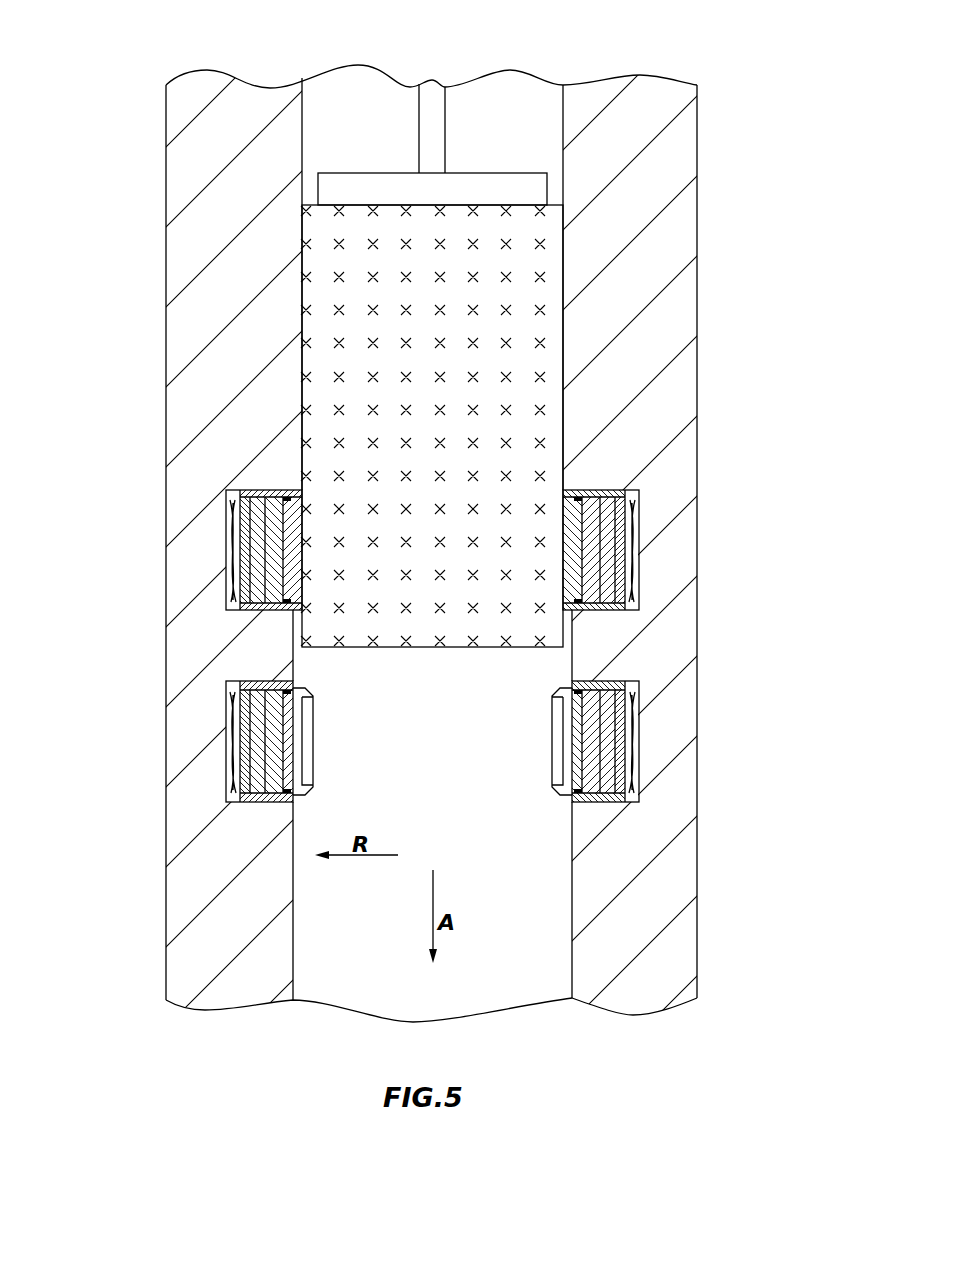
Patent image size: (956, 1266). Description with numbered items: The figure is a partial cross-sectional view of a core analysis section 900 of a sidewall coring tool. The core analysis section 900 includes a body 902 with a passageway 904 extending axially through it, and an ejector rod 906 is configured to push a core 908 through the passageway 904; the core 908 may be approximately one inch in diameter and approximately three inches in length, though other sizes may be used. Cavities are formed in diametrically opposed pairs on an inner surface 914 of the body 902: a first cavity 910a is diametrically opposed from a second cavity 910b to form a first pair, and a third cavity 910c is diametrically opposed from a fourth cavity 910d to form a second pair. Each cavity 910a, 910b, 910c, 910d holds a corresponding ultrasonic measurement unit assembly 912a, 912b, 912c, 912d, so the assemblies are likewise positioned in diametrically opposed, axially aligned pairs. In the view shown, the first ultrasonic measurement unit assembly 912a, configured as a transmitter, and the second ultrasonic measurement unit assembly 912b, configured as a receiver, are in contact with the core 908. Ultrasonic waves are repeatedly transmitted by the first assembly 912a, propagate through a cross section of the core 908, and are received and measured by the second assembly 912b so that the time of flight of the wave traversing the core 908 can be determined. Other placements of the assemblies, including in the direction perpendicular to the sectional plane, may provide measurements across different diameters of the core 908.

The core analysis section 900 is at (452, 586).
The body 902 is at (650, 268).
The passageway 904 is at (572, 975).
The ejector rod 906 is at (455, 97).
The core 908 is at (560, 225).
The first cavity 910a is at (230, 508).
The second cavity 910b is at (638, 492).
The third cavity 910c is at (231, 697).
The fourth cavity 910d is at (636, 778).
The first ultrasonic measurement unit assembly 912a is at (207, 531).
The second ultrasonic measurement unit assembly 912b is at (657, 567).
The third ultrasonic measurement unit assembly 912c is at (208, 742).
The fourth ultrasonic measurement unit assembly 912d is at (655, 729).
The inner surface 914 is at (572, 662).